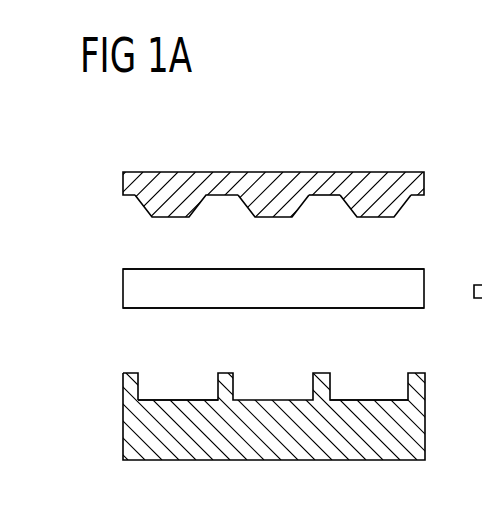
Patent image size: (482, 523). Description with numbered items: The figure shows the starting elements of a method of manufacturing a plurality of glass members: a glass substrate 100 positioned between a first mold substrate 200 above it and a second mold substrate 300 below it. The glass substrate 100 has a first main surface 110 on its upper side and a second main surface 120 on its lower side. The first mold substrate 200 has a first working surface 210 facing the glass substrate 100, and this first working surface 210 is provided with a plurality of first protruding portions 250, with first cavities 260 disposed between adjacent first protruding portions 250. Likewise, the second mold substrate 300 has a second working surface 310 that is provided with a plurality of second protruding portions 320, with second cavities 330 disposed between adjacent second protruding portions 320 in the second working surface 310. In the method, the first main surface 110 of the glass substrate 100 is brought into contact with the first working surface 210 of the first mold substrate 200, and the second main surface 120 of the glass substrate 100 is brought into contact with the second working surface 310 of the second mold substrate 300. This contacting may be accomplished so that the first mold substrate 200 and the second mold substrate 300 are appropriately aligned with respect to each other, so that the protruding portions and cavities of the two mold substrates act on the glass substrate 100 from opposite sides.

The first mold substrate 200 is at (123, 185).
The first working surface 210 is at (404, 199).
The first protruding portions 250 is at (275, 220).
The first cavities 260 is at (318, 196).
The glass substrate 100 is at (133, 289).
The first main surface 110 is at (142, 268).
The second main surface 120 is at (142, 308).
The second mold substrate 300 is at (133, 436).
The second working surface 310 is at (369, 400).
The second protruding portions 320 is at (132, 384).
The second cavities 330 is at (173, 400).